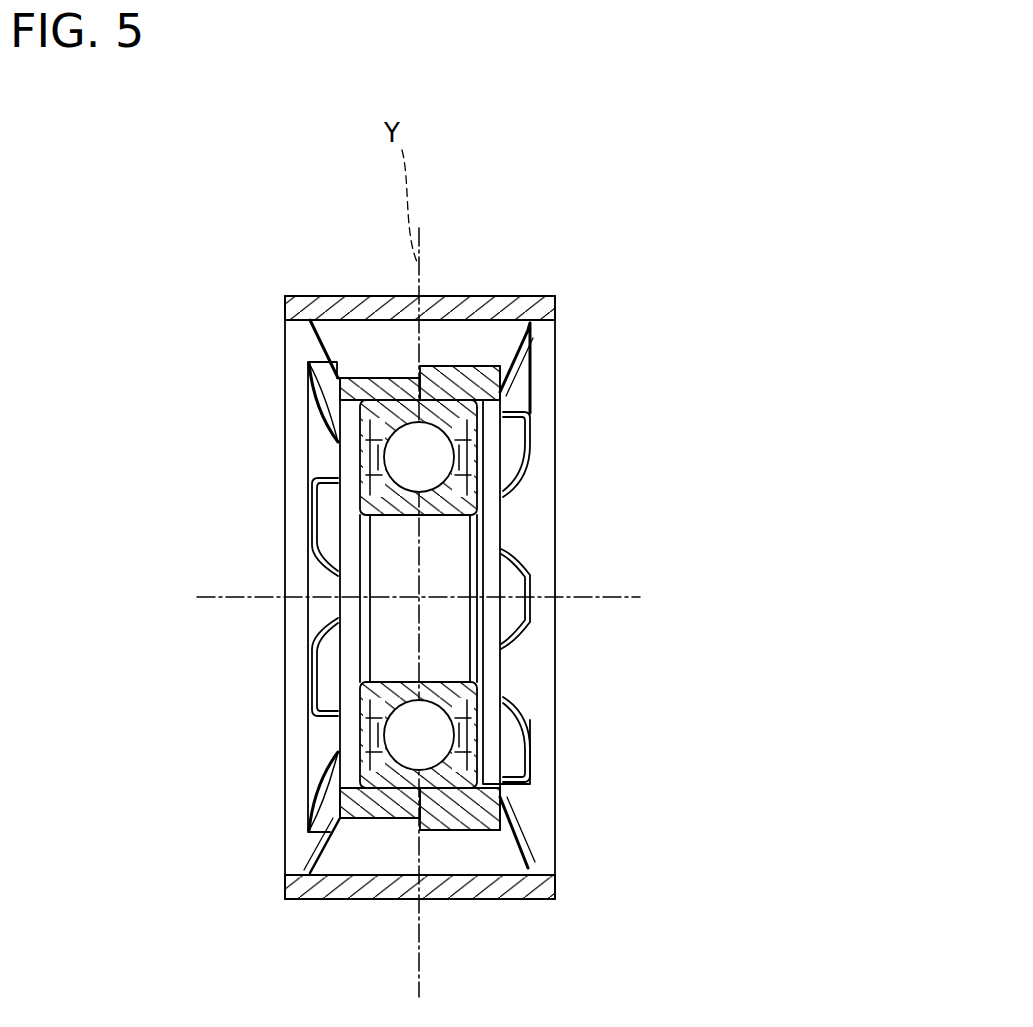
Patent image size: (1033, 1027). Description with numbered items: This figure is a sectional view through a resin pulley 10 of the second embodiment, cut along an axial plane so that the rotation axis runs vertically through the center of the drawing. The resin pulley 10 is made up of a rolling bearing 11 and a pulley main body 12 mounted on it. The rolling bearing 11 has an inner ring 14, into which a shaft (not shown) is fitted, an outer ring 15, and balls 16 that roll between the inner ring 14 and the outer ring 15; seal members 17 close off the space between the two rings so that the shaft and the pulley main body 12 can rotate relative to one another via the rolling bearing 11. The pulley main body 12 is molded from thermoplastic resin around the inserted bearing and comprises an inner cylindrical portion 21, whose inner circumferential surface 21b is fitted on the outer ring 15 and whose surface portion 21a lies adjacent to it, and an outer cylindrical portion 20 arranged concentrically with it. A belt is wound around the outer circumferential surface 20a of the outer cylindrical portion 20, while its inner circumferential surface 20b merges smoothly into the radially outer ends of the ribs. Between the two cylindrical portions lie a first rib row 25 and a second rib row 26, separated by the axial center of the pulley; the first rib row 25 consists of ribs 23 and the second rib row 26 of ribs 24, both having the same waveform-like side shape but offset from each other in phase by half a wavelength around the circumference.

The resin pulley 10 is at (603, 183).
The rolling bearing 11 is at (485, 460).
The pulley main body 12 is at (520, 275).
The inner ring 14 is at (365, 700).
The outer ring 15 is at (437, 787).
The balls 16 is at (407, 743).
The seal members 17 is at (419, 739).
The outer cylindrical portion 20 is at (327, 305).
The outer circumferential surface 20a is at (540, 900).
The inner circumferential surface 20b is at (483, 843).
The inner cylindrical portion 21 is at (308, 394).
The lower right flange portion 21a is at (478, 838).
The inner circumferential surface 21b is at (337, 778).
The ribs 23 is at (372, 338).
The ribs 24 is at (455, 338).
The first rib row 25 is at (330, 341).
The second rib row 26 is at (484, 336).